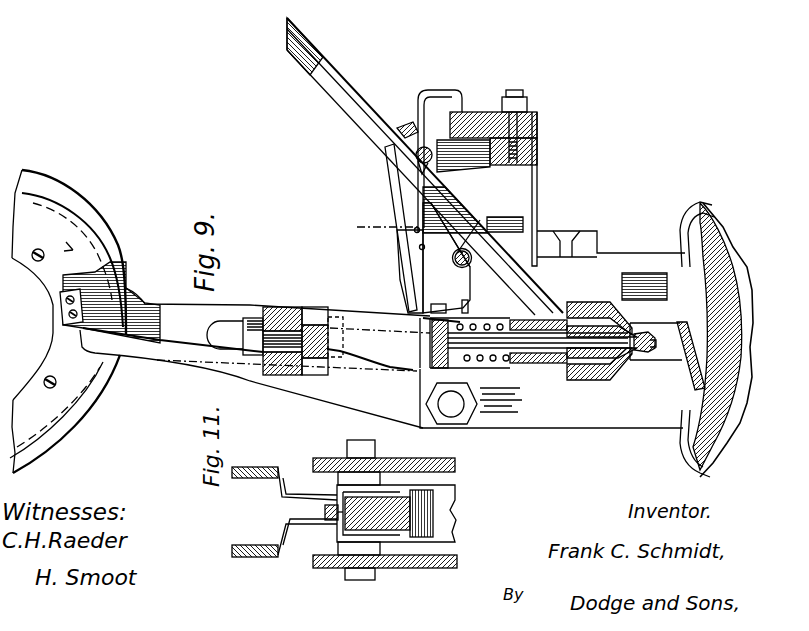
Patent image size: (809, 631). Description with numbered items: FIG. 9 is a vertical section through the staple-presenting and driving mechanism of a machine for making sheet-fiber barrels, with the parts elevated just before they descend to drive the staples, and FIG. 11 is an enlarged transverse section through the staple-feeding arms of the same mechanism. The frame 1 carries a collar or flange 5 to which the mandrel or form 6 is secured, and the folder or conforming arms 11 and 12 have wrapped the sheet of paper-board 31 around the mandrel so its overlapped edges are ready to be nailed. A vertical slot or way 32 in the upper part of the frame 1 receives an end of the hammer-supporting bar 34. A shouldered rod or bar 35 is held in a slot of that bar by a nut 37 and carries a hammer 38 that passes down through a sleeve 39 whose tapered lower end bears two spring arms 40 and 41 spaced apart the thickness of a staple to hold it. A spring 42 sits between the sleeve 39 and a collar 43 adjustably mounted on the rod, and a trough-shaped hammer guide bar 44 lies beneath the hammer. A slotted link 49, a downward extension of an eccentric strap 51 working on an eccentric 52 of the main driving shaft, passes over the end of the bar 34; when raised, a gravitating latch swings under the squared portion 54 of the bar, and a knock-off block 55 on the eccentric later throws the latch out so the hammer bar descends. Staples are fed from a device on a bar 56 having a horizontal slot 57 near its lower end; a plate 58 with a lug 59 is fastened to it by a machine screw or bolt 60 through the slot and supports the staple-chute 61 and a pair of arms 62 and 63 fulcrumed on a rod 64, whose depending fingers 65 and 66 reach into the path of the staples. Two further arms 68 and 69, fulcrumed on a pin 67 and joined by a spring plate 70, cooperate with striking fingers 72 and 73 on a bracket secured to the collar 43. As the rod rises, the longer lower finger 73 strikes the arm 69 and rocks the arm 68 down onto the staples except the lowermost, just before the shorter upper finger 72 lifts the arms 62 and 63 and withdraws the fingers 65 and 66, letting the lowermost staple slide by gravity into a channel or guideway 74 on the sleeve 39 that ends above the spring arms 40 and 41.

In FIG. 9, the frame 1 is at (611, 239).
In FIG. 9, the collar or flange 5 is at (729, 340).
In FIG. 9, the mandrel or form 6 is at (722, 336).
In FIG. 9, the folder or conforming arms 11 is at (527, 234).
In FIG. 9, the conforming arms 12 is at (687, 443).
In FIG. 9, the sheet of paper-board 31 is at (683, 359).
In FIG. 9, the slot or way 32 is at (644, 298).
In FIG. 9, the hammer-supporting bar 34 is at (282, 319).
In FIG. 9, the rod or bar 35 is at (408, 320).
In FIG. 9, the nut 37 is at (252, 310).
In FIG. 9, the hammer 38 is at (596, 371).
In FIG. 9, the sleeve 39 is at (538, 368).
In FIG. 9, the spring arm 40 is at (603, 366).
In FIG. 9, the spring arm 41 is at (633, 312).
In FIG. 9, the spring 42 is at (538, 370).
In FIG. 9, the collar 43 is at (551, 373).
In FIG. 9, the hammer guide bar 44 is at (599, 377).
In FIG. 9, the slotted link 49 is at (255, 344).
In FIG. 9, the eccentric strap 51 is at (91, 268).
In FIG. 9, the eccentric 52 is at (68, 315).
In FIG. 9, the squared portion 54 is at (322, 319).
In FIG. 9, the knock-off block 55 is at (52, 307).
In FIG. 9, the bar 56 is at (447, 150).
In FIG. 9, the horizontally-disposed slot 57 is at (508, 124).
In FIG. 9, the plate 58 is at (546, 189).
In FIG. 11, the plate 58 is at (385, 520).
In FIG. 9, the lug 59 is at (526, 155).
In FIG. 9, the machine screw or bolt 60 is at (501, 109).
In FIG. 9, the staple-chute 61 is at (425, 166).
In FIG. 11, the staple-chute 61 is at (396, 513).
In FIG. 11, the arm 62 is at (255, 536).
In FIG. 9, the arm 63 is at (380, 228).
In FIG. 11, the arm 63 is at (255, 456).
In FIG. 9, the rod 64 is at (418, 143).
In FIG. 11, the finger 65 is at (307, 557).
In FIG. 9, the finger 66 is at (428, 209).
In FIG. 11, the finger 66 is at (307, 470).
In FIG. 9, the pin 67 is at (503, 210).
In FIG. 9, the arm 68 is at (456, 186).
In FIG. 11, the arm 68 is at (326, 472).
In FIG. 9, the arm 69 is at (464, 248).
In FIG. 9, the spring plate 70 is at (447, 258).
In FIG. 11, the spring plate 70 is at (326, 560).
In FIG. 9, the striking finger 72 is at (395, 271).
In FIG. 9, the striking finger 73 is at (457, 309).
In FIG. 9, the channel or guideway 74 is at (597, 301).